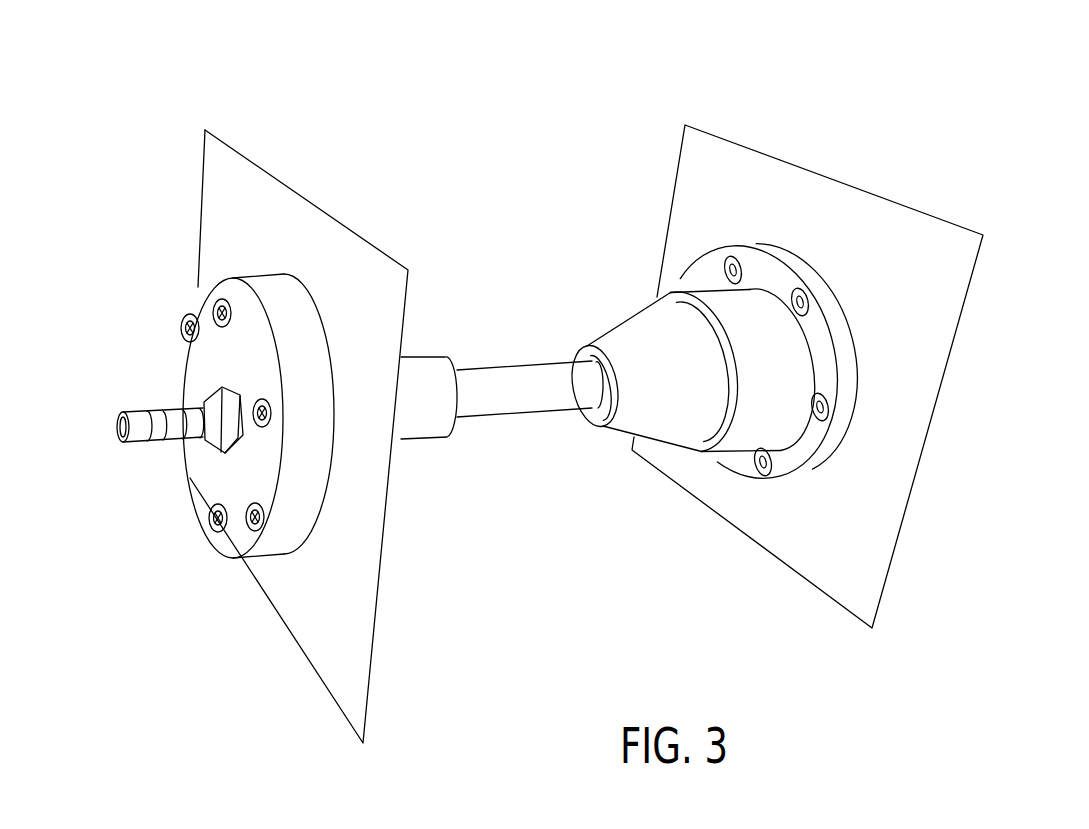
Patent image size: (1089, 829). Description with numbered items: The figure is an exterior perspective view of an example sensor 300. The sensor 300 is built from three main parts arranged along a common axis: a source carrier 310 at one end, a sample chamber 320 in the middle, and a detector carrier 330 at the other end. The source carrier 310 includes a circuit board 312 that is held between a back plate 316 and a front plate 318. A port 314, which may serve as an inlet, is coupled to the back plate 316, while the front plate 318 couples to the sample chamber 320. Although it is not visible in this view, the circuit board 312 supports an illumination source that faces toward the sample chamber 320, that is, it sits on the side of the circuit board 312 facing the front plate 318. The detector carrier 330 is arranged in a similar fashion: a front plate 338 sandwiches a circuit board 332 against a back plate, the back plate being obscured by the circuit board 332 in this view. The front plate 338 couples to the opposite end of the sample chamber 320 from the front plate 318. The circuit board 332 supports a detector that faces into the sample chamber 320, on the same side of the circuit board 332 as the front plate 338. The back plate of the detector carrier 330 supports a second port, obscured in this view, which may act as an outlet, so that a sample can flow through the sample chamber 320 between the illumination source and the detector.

The sensor 300 is at (108, 126).
The source carrier 310 is at (251, 123).
The circuit board 312 is at (222, 221).
The port 314 is at (122, 410).
The back plate 316 is at (208, 365).
The front plate 318 is at (418, 424).
The sample chamber 320 is at (517, 383).
The detector carrier 330 is at (997, 186).
The circuit board 332 is at (798, 549).
The front plate 338 is at (627, 338).